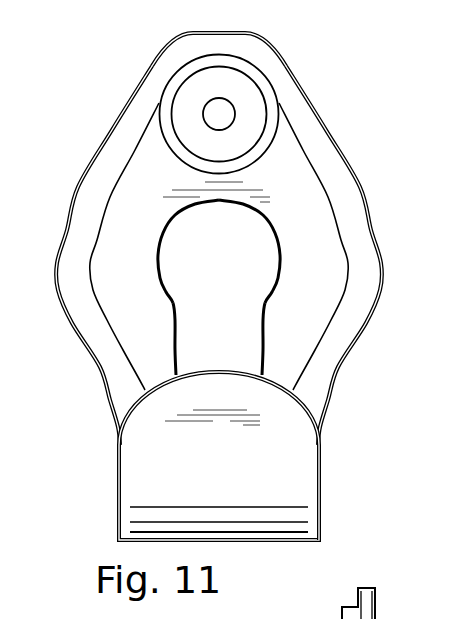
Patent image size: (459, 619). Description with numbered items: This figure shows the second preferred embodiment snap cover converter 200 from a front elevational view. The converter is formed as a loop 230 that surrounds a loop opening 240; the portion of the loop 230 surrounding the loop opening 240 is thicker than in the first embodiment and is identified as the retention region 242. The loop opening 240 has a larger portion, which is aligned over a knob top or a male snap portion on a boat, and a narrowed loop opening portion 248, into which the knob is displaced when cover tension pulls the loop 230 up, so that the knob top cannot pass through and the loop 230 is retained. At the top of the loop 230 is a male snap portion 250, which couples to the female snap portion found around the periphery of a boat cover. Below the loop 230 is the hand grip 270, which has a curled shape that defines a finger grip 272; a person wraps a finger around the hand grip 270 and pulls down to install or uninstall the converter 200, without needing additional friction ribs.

The snap cover converter 200 is at (333, 54).
The loop 230 is at (113, 117).
The loop opening 240 is at (166, 226).
The retention region 242 is at (135, 170).
The narrowed loop opening portion 248 is at (188, 333).
The male snap portion 250 is at (178, 110).
The hand grip 270 is at (110, 532).
The finger grip 272 is at (307, 452).